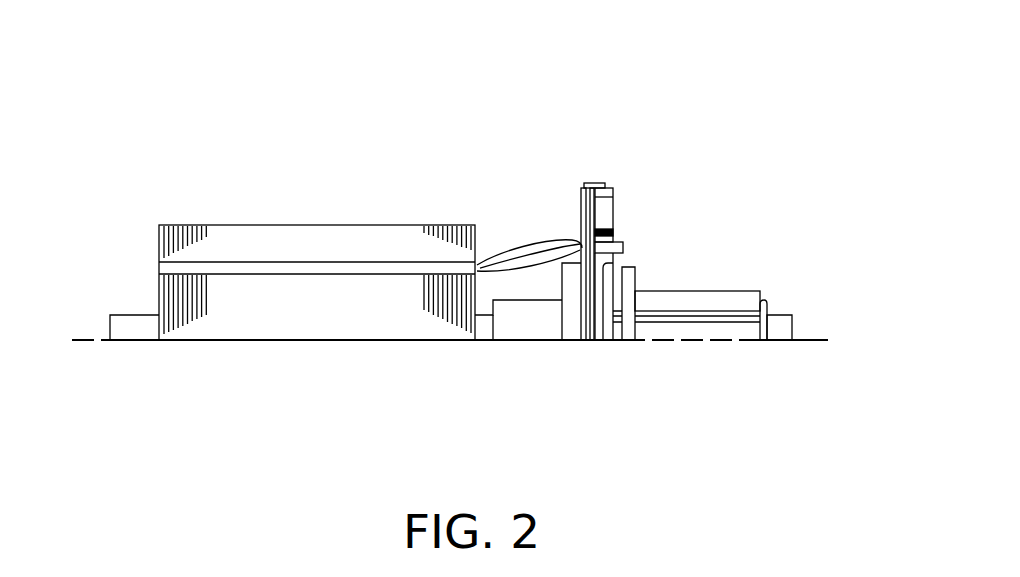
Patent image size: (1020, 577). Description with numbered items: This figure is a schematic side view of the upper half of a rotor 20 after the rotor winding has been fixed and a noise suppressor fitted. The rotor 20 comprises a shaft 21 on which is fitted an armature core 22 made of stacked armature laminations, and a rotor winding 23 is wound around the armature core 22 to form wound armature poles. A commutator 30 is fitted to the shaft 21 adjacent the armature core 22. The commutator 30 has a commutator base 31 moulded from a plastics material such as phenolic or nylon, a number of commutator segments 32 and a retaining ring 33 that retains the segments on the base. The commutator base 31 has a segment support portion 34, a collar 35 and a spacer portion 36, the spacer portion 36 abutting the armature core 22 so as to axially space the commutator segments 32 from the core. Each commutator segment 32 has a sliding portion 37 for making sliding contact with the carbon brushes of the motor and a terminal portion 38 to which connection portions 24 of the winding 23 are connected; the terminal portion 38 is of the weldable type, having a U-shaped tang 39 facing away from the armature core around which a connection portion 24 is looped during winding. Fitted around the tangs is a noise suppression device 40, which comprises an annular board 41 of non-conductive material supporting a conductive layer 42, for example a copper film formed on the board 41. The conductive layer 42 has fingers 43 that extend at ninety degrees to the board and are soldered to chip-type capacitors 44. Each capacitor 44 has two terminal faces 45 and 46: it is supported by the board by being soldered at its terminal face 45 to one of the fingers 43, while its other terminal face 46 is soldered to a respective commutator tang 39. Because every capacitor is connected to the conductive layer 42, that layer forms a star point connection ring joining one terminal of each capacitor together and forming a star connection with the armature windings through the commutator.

The rotor 20 is at (290, 187).
The shaft 21 is at (120, 314).
The armature core 22 is at (207, 224).
The rotor winding 23 is at (483, 262).
The connection portion 24 is at (545, 250).
The commutator 30 is at (747, 292).
The commutator base 31 is at (545, 340).
The commutator segments 32 is at (663, 292).
The retaining ring 33 is at (623, 340).
The segment support portion 34 is at (762, 320).
The collar 35 is at (568, 340).
The spacer portion 36 is at (513, 335).
The sliding portion 37 is at (710, 292).
The terminal portion 38 is at (623, 250).
The U-shaped tang 39 is at (620, 245).
The noise suppression device 40 is at (613, 185).
The annular board 41 is at (581, 232).
The conductive layer 42 is at (590, 200).
The fingers 43 is at (595, 183).
The chip-type capacitor 44 is at (613, 212).
The terminal face 45 is at (612, 190).
The terminal face 46 is at (613, 235).